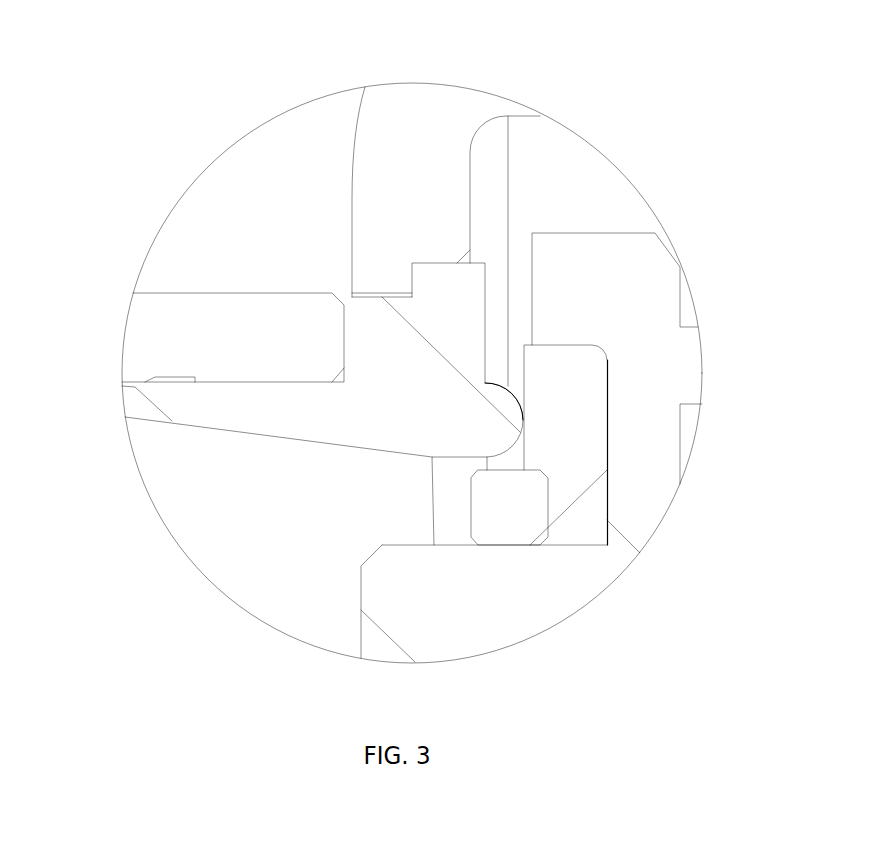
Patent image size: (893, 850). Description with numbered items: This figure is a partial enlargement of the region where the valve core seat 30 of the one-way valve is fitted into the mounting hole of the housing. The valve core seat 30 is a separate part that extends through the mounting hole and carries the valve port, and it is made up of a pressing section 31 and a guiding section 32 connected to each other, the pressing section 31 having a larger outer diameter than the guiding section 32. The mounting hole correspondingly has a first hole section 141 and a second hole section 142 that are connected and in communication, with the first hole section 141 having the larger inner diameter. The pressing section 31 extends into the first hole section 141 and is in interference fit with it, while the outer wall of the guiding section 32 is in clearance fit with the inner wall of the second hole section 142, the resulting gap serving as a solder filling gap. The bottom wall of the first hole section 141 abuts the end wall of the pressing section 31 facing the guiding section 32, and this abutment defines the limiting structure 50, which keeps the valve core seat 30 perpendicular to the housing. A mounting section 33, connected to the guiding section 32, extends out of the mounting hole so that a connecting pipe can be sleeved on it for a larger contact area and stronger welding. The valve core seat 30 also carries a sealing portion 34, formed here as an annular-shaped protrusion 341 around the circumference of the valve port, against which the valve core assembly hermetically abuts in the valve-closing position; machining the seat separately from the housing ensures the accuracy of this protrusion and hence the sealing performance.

The valve core seat 30 is at (285, 395).
The pressing section 31 is at (472, 320).
The guiding section 32 is at (358, 317).
The mounting section 33 is at (228, 410).
The sealing portion 34 is at (508, 408).
The annular-shaped protrusion 341 is at (493, 392).
The limiting structure 50 is at (412, 277).
The first hole section 141 is at (445, 263).
The second hole section 142 is at (393, 293).